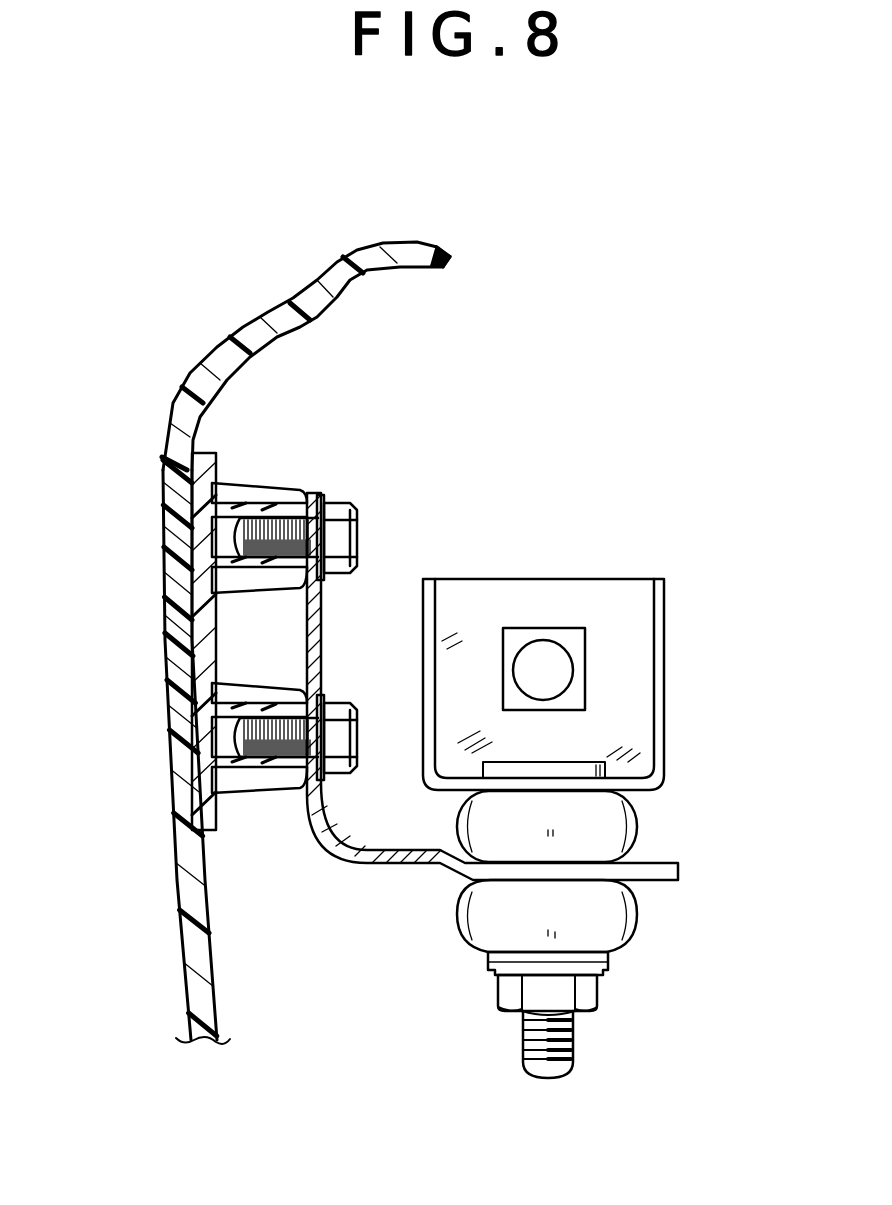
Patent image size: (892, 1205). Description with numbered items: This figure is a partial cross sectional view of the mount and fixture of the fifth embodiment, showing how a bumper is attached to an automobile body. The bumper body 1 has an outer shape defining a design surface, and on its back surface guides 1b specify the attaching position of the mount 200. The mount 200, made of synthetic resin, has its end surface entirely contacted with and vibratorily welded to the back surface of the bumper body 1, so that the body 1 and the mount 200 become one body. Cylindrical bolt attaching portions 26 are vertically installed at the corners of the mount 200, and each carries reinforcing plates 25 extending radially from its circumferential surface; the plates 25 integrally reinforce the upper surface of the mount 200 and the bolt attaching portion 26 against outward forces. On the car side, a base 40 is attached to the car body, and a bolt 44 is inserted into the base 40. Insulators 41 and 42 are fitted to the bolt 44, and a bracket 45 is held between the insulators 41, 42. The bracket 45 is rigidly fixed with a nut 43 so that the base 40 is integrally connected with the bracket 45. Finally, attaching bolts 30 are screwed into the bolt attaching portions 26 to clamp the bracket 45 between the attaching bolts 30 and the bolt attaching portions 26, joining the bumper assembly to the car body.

The bumper body 1 is at (243, 643).
The guide 1b is at (193, 442).
The reinforcing plate 25 is at (226, 489).
The bolt attaching portion 26 is at (348, 504).
The attaching bolt 30 is at (340, 664).
The base 40 is at (628, 702).
The insulator 41 is at (623, 833).
The insulator 42 is at (627, 913).
The nut 43 is at (590, 995).
The bolt 44 is at (567, 1045).
The bracket 45 is at (363, 867).
The mount 200 is at (196, 645).